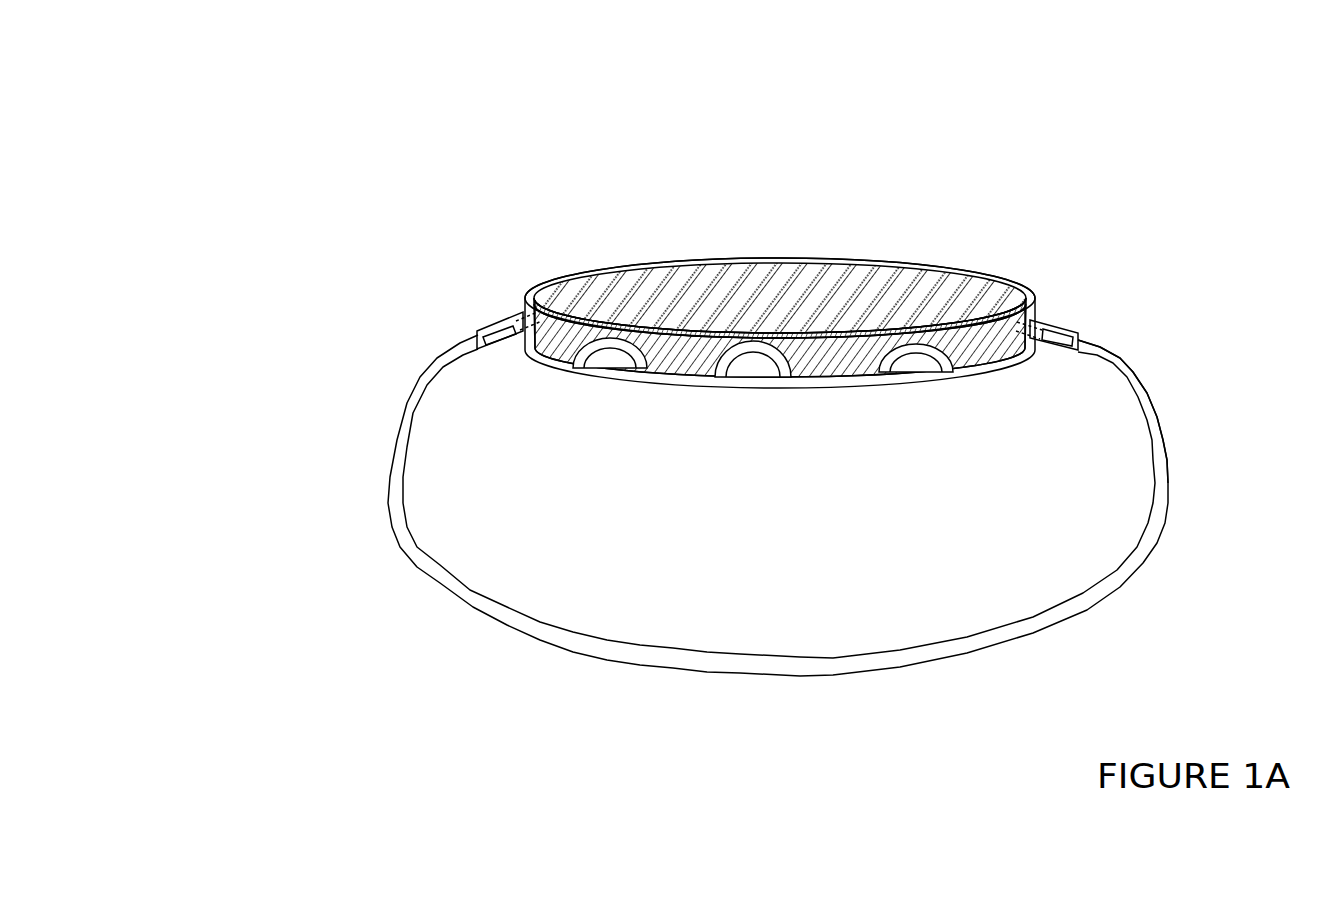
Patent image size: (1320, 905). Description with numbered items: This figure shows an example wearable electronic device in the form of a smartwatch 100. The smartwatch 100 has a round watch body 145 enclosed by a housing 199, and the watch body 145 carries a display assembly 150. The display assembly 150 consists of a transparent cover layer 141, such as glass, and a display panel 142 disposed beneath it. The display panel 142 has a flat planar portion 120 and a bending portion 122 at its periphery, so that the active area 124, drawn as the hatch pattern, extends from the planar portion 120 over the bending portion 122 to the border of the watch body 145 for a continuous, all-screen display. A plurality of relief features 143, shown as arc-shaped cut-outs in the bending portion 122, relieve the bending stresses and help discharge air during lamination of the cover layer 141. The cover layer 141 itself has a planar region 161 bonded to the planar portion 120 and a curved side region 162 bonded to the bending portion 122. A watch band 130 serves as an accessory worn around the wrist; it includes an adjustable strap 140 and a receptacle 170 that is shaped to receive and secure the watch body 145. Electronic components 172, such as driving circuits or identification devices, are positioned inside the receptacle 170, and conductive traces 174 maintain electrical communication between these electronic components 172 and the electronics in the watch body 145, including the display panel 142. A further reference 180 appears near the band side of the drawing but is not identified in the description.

The smartwatch 100 is at (1136, 163).
The planar portion 120 is at (853, 277).
The bending portion 122 is at (848, 353).
The active area 124 is at (933, 277).
The watch band 130 is at (334, 413).
The strap 140 is at (402, 537).
The cover layer 141 is at (693, 260).
The display panel 142 is at (612, 290).
The relief features 143 is at (925, 363).
The watch body 145 is at (523, 293).
The display assembly 150 is at (928, 212).
The planar region 161 is at (744, 260).
The curved side region 162 is at (527, 318).
The receptacle 170 is at (1058, 322).
The electronic components 172 is at (1062, 338).
The conductive traces 174 is at (1033, 355).
The band end portion 180 is at (1186, 411).
The housing 199 is at (980, 260).